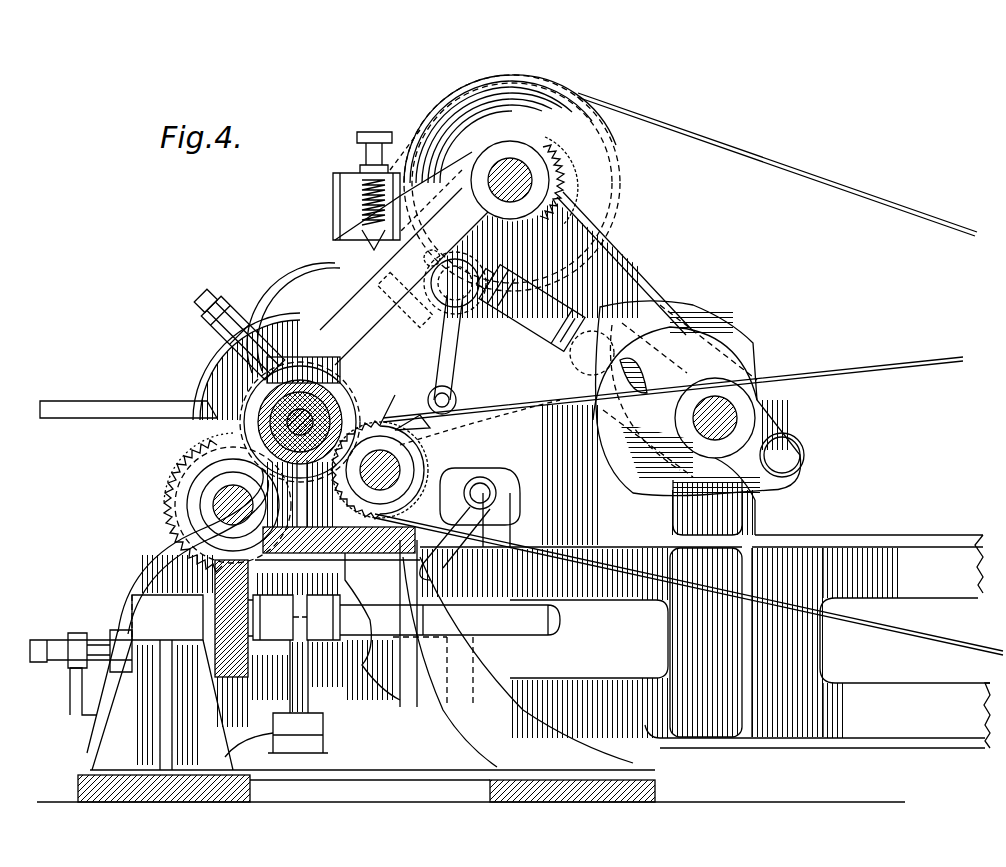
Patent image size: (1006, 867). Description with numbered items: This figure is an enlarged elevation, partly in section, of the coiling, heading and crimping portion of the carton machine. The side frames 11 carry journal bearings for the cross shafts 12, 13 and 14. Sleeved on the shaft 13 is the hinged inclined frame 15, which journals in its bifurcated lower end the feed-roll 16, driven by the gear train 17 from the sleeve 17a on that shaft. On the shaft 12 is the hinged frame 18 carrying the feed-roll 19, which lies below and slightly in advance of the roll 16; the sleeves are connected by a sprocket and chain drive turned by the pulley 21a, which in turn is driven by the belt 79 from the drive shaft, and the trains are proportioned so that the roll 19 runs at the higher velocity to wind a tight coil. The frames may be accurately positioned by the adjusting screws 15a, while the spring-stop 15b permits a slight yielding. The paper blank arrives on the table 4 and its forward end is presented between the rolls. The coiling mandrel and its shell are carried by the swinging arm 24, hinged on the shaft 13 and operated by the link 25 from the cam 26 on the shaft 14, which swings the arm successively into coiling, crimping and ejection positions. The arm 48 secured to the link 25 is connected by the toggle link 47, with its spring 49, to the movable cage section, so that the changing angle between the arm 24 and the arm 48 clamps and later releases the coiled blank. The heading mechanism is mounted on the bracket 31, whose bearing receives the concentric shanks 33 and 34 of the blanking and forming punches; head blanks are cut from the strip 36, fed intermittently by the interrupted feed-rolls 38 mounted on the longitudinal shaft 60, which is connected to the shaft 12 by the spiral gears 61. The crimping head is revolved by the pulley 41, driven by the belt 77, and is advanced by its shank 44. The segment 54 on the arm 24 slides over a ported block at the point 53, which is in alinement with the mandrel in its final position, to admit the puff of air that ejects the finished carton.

The table 4 is at (55, 420).
The side frames 11 is at (870, 533).
The cross shaft 12 is at (200, 515).
The cross shaft 13 is at (540, 180).
The cross shaft 14 is at (740, 415).
The hinged inclined frame 15 is at (418, 180).
The adjusting screws 15a is at (220, 300).
The spring-stop 15b is at (340, 260).
The feed-roll 16 is at (218, 345).
The gear train 17 is at (590, 193).
The sleeve 17a is at (600, 152).
The hinged frame 18 is at (195, 442).
The feed-roll 19 is at (215, 392).
The pulley 21a is at (562, 88).
The swinging arm 24 is at (590, 250).
The link 25 is at (620, 300).
The cam 26 is at (745, 340).
The bracket 31 is at (375, 556).
The shank 33 is at (300, 380).
The shank 34 is at (290, 412).
The strip 36 is at (338, 658).
The interrupted feed-rolls 38 is at (300, 616).
The pulley 41 is at (520, 452).
The shank 44 is at (395, 400).
The toggle link 47 is at (430, 428).
The arm 48 is at (456, 360).
The spring 49 is at (405, 440).
The point 53 is at (520, 494).
The segment 54 is at (505, 470).
The shaft 60 is at (540, 638).
The spiral gears 61 is at (243, 680).
The belt 77 is at (903, 356).
The belt 79 is at (794, 165).